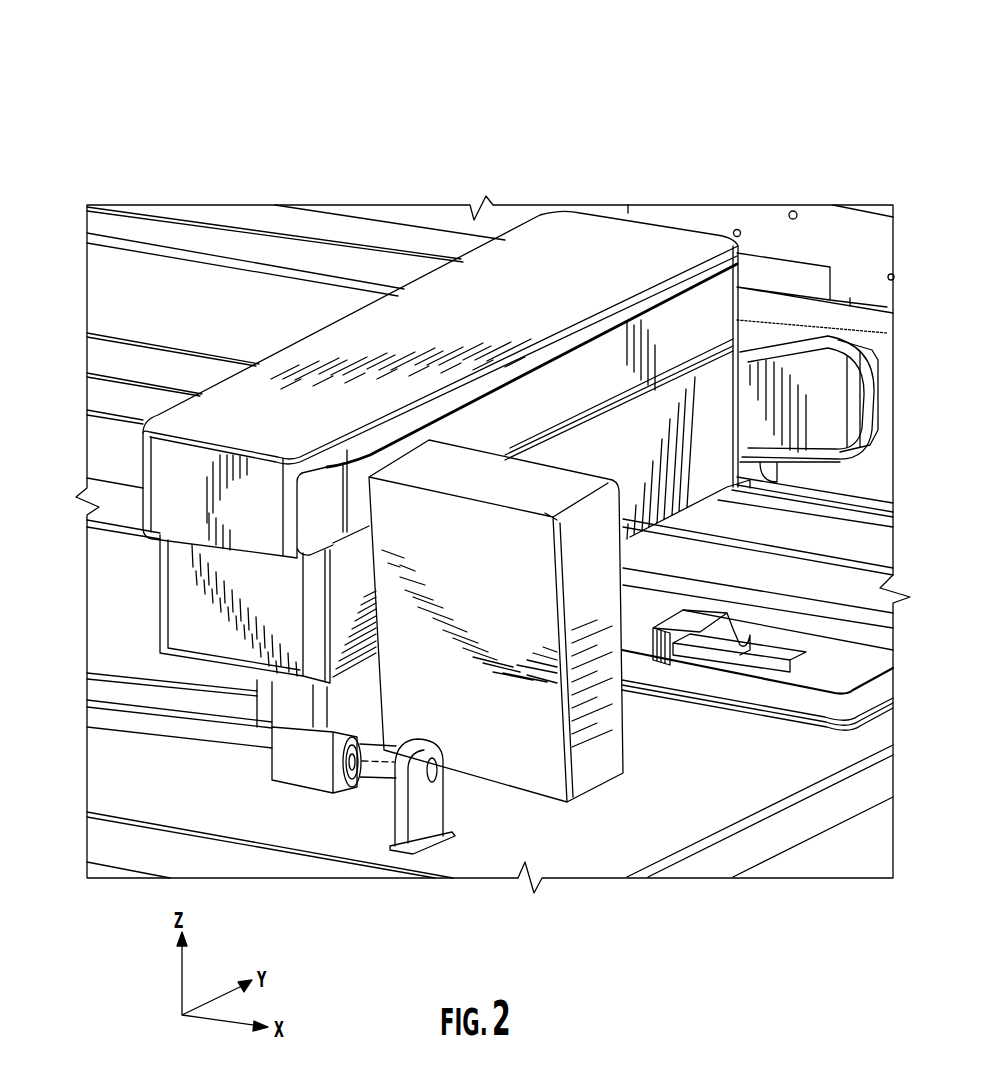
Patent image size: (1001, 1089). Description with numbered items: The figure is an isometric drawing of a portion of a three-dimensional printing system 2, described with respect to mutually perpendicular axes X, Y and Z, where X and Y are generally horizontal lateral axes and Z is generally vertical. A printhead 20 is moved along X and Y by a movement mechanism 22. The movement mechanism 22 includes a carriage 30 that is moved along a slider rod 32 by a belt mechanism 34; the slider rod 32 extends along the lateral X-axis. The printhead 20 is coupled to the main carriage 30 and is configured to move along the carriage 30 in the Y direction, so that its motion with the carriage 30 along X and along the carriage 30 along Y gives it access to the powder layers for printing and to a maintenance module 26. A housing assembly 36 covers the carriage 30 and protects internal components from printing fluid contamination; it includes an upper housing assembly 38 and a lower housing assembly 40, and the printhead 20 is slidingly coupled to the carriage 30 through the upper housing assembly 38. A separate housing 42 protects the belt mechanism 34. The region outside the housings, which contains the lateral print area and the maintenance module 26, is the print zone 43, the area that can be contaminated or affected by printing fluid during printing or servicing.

The three-dimensional printing system 2 is at (582, 91).
The movement mechanism 22 is at (643, 180).
The carriage 30 is at (541, 246).
The housing assembly 36 is at (428, 323).
The belt mechanism 34 is at (790, 385).
The housing 42 is at (790, 385).
The upper housing assembly 38 is at (173, 473).
The lower housing assembly 40 is at (370, 643).
The printhead 20 is at (540, 773).
The slider rod 32 is at (190, 735).
The maintenance module 26 is at (757, 700).
The print zone 43 is at (640, 618).